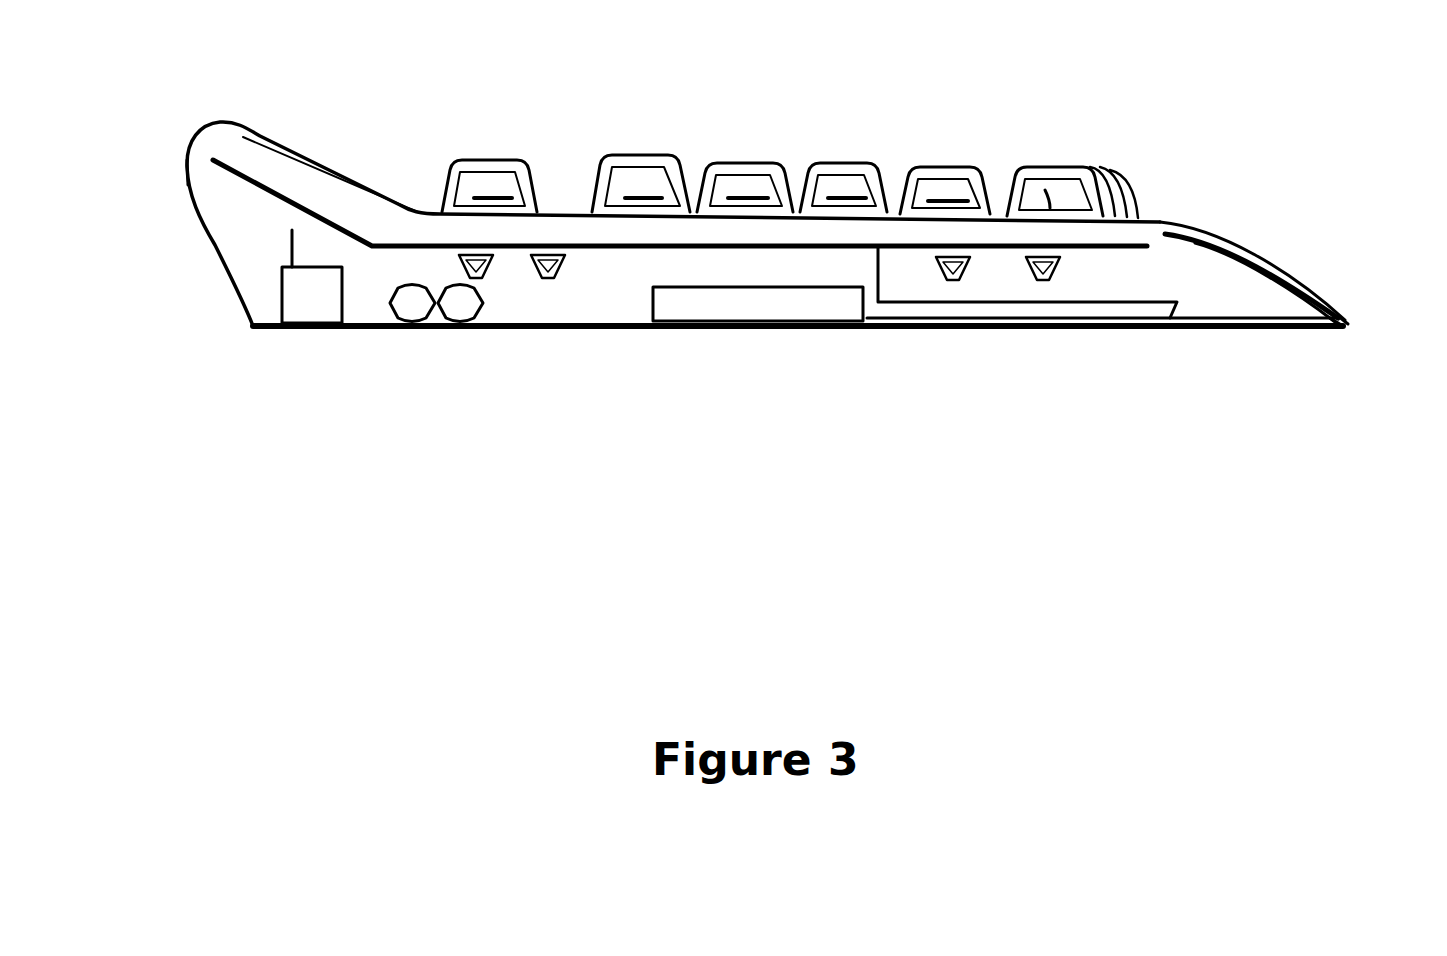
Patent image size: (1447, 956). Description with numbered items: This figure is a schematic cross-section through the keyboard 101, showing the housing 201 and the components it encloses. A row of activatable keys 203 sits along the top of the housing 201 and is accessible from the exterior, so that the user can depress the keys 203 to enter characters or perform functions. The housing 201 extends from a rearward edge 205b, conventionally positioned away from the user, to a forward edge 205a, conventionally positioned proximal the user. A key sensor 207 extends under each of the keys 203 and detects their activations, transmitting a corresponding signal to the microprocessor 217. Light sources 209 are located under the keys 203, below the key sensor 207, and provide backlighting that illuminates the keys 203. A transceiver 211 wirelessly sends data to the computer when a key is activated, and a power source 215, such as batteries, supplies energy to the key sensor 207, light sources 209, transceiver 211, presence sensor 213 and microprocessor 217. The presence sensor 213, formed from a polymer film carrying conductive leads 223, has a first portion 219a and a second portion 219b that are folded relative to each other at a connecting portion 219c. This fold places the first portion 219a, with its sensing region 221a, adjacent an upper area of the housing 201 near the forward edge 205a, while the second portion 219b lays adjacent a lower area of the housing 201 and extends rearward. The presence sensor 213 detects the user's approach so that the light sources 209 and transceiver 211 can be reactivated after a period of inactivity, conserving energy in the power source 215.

The keyboard 101 is at (832, 108).
The housing 201 is at (195, 153).
The keys 203 is at (290, 143).
The forward edge 205a is at (1352, 322).
The rearward edge 205b is at (190, 180).
The key sensor 207 is at (245, 183).
The light sources 209 is at (488, 268).
The transceiver 211 is at (310, 303).
The presence sensor 213 is at (1260, 278).
The power source 215 is at (415, 308).
The microprocessor 217 is at (755, 303).
The first portion 219a is at (1220, 247).
The second portion 219b is at (1210, 332).
The connecting portion 219c is at (1340, 332).
The sensing region 221a is at (1255, 253).
The conductive leads 223 is at (1100, 302).